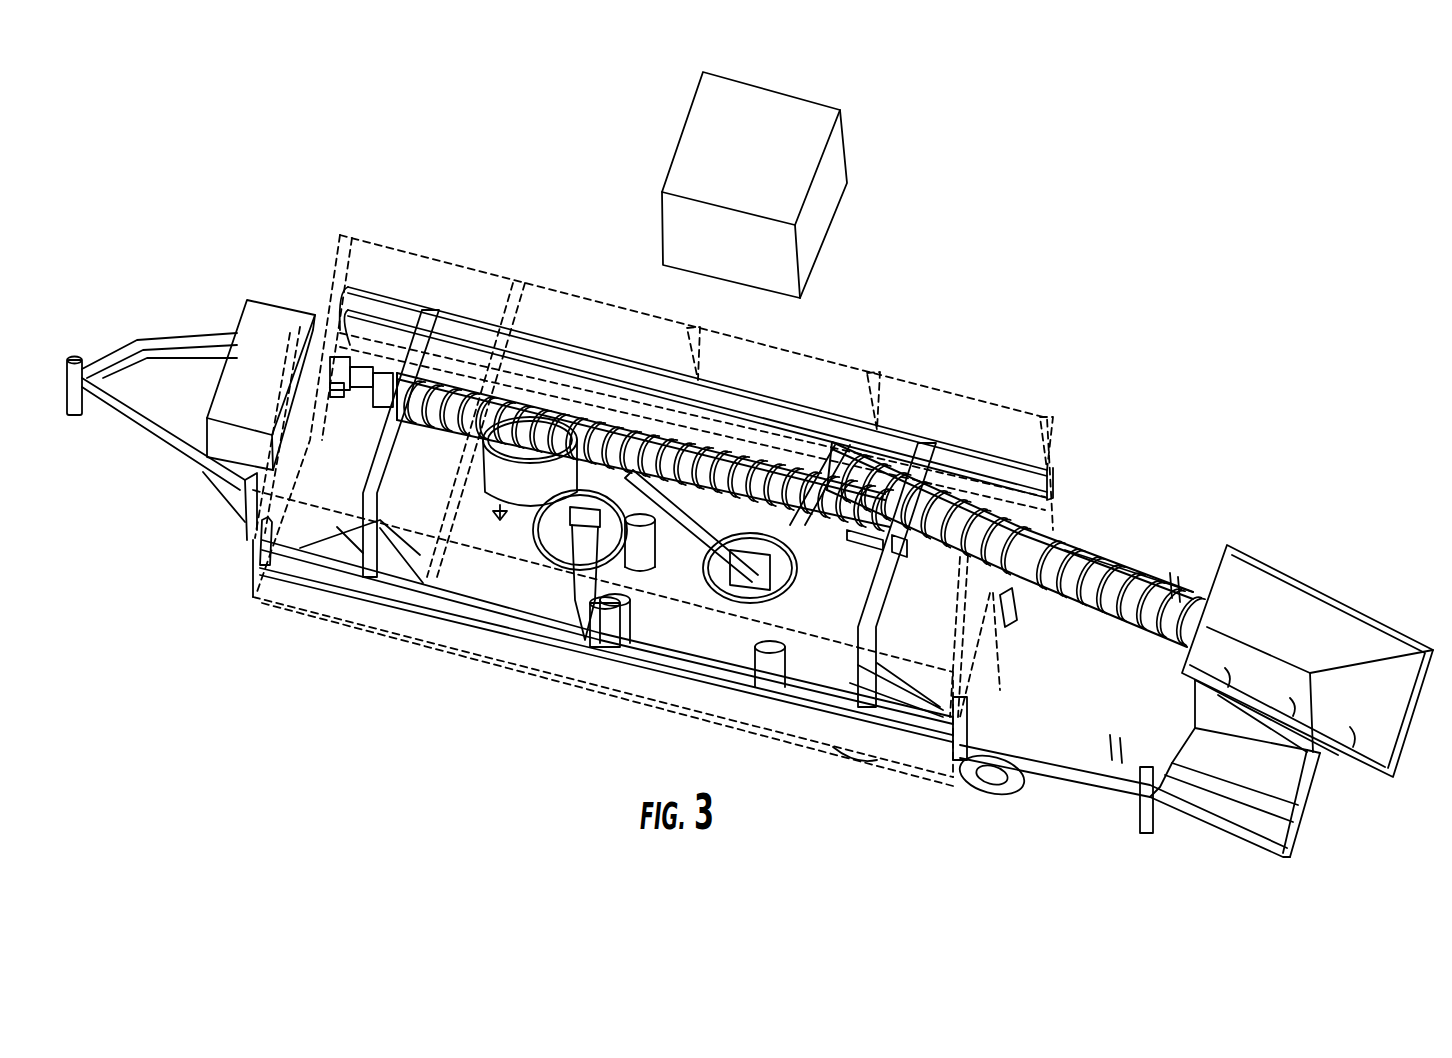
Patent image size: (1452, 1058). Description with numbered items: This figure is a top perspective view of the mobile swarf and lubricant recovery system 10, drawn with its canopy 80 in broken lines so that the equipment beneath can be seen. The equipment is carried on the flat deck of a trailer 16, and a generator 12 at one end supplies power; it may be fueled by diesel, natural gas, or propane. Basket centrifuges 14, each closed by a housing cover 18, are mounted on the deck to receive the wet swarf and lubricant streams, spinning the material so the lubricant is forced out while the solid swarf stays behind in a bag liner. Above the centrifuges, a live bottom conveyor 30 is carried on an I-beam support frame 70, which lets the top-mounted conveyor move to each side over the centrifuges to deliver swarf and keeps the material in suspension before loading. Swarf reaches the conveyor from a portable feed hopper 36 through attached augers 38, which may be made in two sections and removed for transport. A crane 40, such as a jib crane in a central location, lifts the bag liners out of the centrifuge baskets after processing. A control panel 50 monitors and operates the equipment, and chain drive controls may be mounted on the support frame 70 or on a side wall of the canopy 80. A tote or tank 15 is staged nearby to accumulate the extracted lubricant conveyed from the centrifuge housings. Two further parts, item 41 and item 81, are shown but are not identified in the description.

The material handling apparatus 10 is at (897, 815).
The generator 12 is at (257, 327).
The basket centrifuge 14 is at (533, 573).
The tote or tank 15 is at (757, 167).
The trailer 16 is at (1087, 787).
The housing cover 18 is at (720, 427).
The live bottom conveyor 30 is at (465, 430).
The portable feed hopper 36 is at (1243, 603).
The auger 38 is at (1070, 550).
The crane 40 is at (655, 585).
The mixing drum 41 is at (705, 560).
The control panel 50 is at (1017, 607).
The I-beam support frame 70 is at (927, 443).
The canopy 80 is at (420, 290).
The auger motor 81 is at (360, 350).